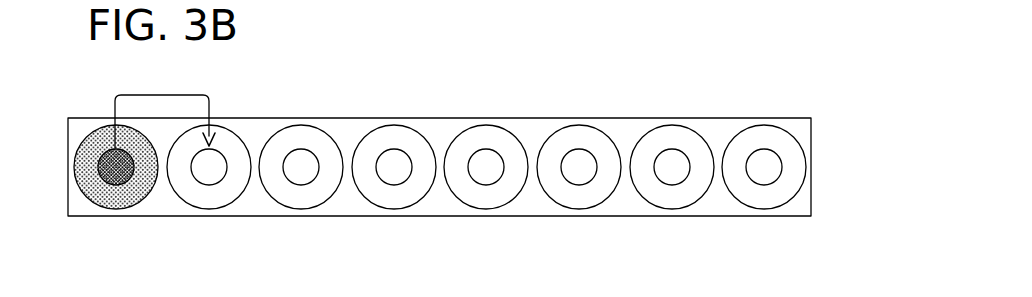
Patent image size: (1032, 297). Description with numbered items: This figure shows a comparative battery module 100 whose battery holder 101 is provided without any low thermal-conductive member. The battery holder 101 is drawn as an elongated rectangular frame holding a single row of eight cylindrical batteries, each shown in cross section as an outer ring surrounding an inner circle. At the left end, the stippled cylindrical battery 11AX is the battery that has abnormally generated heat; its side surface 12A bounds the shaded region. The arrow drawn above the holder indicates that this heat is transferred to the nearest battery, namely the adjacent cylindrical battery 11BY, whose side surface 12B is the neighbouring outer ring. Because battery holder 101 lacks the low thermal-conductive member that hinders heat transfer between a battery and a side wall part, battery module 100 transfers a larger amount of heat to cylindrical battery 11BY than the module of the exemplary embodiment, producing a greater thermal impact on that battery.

The battery module 100 is at (773, 53).
The battery holder 101 is at (622, 135).
The side surface 12A is at (84, 193).
The cylindrical battery 11AX is at (110, 195).
The cylindrical battery 11BY is at (212, 203).
The side surface 12B is at (238, 203).